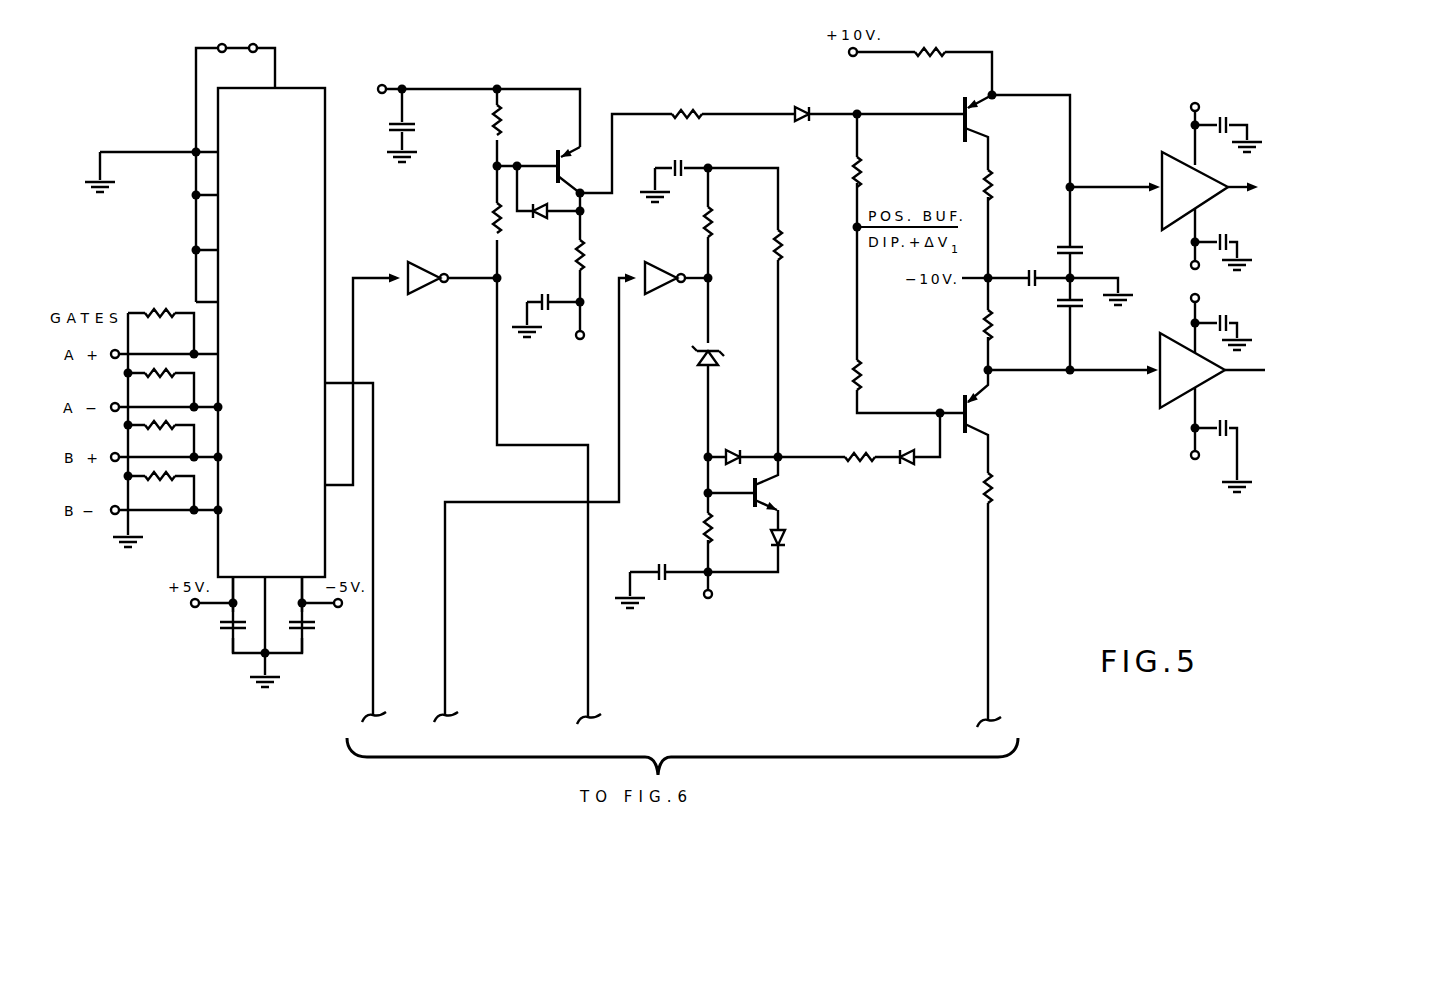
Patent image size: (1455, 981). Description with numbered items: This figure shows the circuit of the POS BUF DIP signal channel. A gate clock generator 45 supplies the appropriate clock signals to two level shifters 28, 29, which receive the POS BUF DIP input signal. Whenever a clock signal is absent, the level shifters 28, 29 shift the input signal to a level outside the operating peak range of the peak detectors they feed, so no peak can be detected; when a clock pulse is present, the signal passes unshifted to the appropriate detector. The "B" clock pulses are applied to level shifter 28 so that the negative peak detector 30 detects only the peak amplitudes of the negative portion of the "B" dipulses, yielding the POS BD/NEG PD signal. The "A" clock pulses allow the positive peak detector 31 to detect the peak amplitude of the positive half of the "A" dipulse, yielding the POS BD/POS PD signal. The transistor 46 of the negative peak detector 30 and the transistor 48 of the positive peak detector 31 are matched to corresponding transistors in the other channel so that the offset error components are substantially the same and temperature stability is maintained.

The gate clock generator 45 is at (299, 85).
The level shifter 28 is at (532, 386).
The level shifter 29 is at (698, 418).
The transistor 46 is at (975, 122).
The transistor 48 is at (978, 414).
The negative peak detector 30 is at (1212, 203).
The positive peak detector 31 is at (1212, 425).